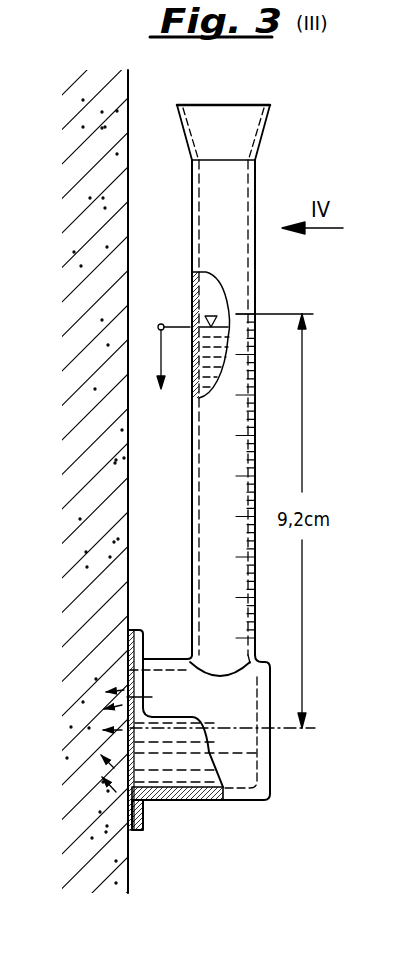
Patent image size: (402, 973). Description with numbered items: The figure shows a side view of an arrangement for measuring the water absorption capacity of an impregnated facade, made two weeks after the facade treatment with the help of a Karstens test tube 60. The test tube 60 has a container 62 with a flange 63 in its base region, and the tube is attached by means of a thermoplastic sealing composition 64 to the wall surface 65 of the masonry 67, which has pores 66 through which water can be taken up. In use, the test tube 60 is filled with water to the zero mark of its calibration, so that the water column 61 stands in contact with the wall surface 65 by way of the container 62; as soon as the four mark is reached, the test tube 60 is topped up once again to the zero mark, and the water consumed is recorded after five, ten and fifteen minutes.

The test tube 60 is at (265, 279).
The water column in measuring tube 61 is at (217, 363).
The container 62 is at (205, 777).
The flange 63 is at (145, 807).
The thermoplastic sealing composition 64 is at (137, 834).
The wall surface 65 is at (130, 873).
The pores 66 is at (101, 739).
The masonry 67 is at (86, 700).